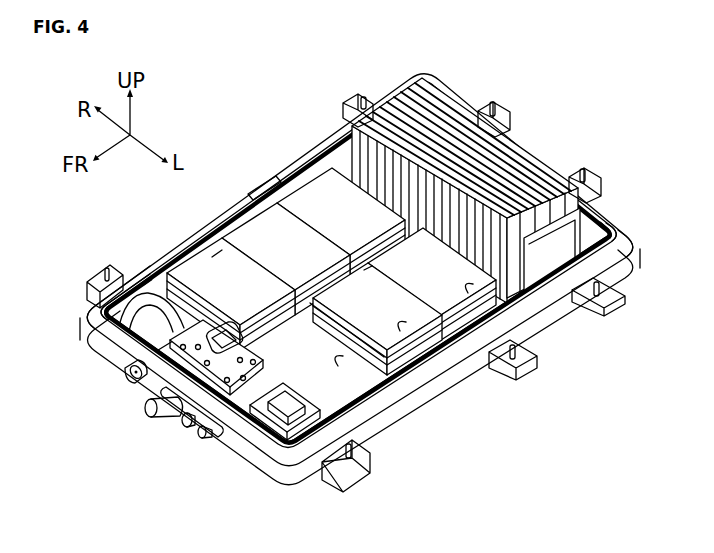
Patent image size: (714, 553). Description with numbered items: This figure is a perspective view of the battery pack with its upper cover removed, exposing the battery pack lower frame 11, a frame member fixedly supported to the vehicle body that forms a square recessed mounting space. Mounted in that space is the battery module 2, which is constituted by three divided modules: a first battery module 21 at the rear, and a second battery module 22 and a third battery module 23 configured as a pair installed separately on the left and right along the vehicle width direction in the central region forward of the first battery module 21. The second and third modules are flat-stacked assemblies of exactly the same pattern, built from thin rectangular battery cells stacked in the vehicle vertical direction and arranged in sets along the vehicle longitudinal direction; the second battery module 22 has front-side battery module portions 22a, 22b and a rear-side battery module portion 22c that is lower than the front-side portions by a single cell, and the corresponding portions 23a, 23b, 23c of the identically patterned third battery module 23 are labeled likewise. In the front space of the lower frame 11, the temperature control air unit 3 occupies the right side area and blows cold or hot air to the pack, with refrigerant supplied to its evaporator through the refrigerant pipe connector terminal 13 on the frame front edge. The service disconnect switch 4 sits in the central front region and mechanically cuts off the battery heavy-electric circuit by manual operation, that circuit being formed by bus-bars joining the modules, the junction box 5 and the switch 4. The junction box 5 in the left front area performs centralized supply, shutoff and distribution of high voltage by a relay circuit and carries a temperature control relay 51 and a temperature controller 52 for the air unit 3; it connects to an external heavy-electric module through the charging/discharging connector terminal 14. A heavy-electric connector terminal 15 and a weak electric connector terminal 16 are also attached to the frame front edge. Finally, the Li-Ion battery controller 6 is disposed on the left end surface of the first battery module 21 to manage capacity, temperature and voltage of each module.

The battery module 2 is at (376, 272).
The first battery module 21 is at (405, 145).
The second battery module 22 is at (282, 228).
The front-side battery module portion 22a is at (212, 256).
The front-side battery module portion 22b is at (250, 226).
The rear-side battery module portion 22c is at (364, 270).
The third battery module 23 is at (372, 292).
The bracket portion 23a is at (340, 362).
The bracket portion 23b is at (401, 327).
The bracket portion 23c is at (470, 289).
The temperature control air unit 3 is at (159, 290).
The service disconnect switch 4 is at (230, 340).
The junction box 5 is at (260, 450).
The temperature control relay 51 is at (273, 398).
The temperature controller 52 is at (243, 400).
The Li-Ion battery controller 6 is at (550, 266).
The battery pack lower frame 11 is at (435, 396).
The refrigerant pipe connector terminal 13 is at (124, 382).
The charging/discharging connector terminal 14 is at (157, 410).
The heavy-electric connector terminal 15 is at (187, 427).
The weak electric connector terminal 16 is at (205, 438).